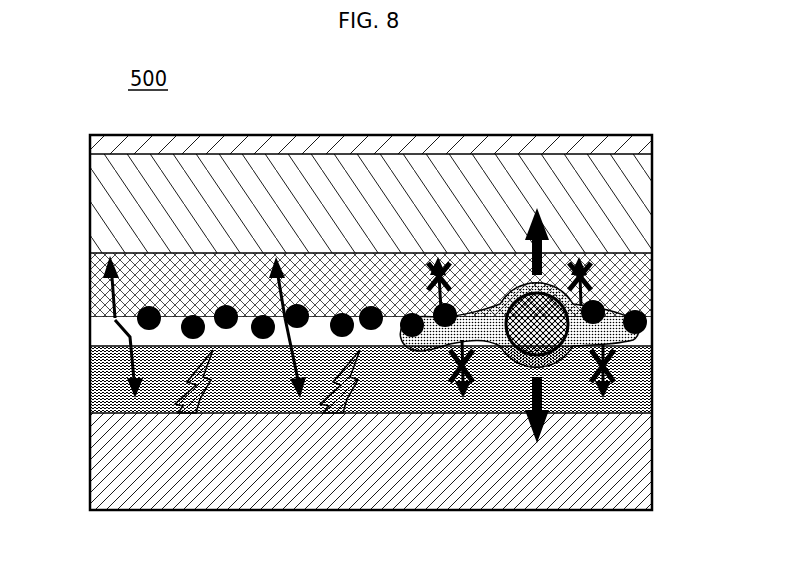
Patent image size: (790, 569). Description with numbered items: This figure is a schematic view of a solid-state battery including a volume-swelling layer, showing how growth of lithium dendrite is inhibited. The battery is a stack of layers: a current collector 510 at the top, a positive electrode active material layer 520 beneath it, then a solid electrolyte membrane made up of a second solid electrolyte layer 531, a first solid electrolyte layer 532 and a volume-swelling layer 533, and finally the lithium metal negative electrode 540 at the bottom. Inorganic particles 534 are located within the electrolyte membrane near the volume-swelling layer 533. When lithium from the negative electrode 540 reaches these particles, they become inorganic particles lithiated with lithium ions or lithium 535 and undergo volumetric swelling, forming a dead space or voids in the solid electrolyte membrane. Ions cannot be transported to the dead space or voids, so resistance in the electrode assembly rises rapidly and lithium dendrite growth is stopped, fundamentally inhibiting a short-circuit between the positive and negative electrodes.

The current collector 510 is at (89, 144).
The positive electrode active material layer 520 is at (89, 206).
The second solid electrolyte layer 531 is at (89, 285).
The first solid electrolyte layer 532 is at (89, 332).
The volume-swelling layer 533 is at (89, 382).
The inorganic particles 534 is at (634, 324).
The inorganic particles lithiated with lithium ions or lithium 535 is at (546, 340).
The negative electrode 540 is at (89, 463).